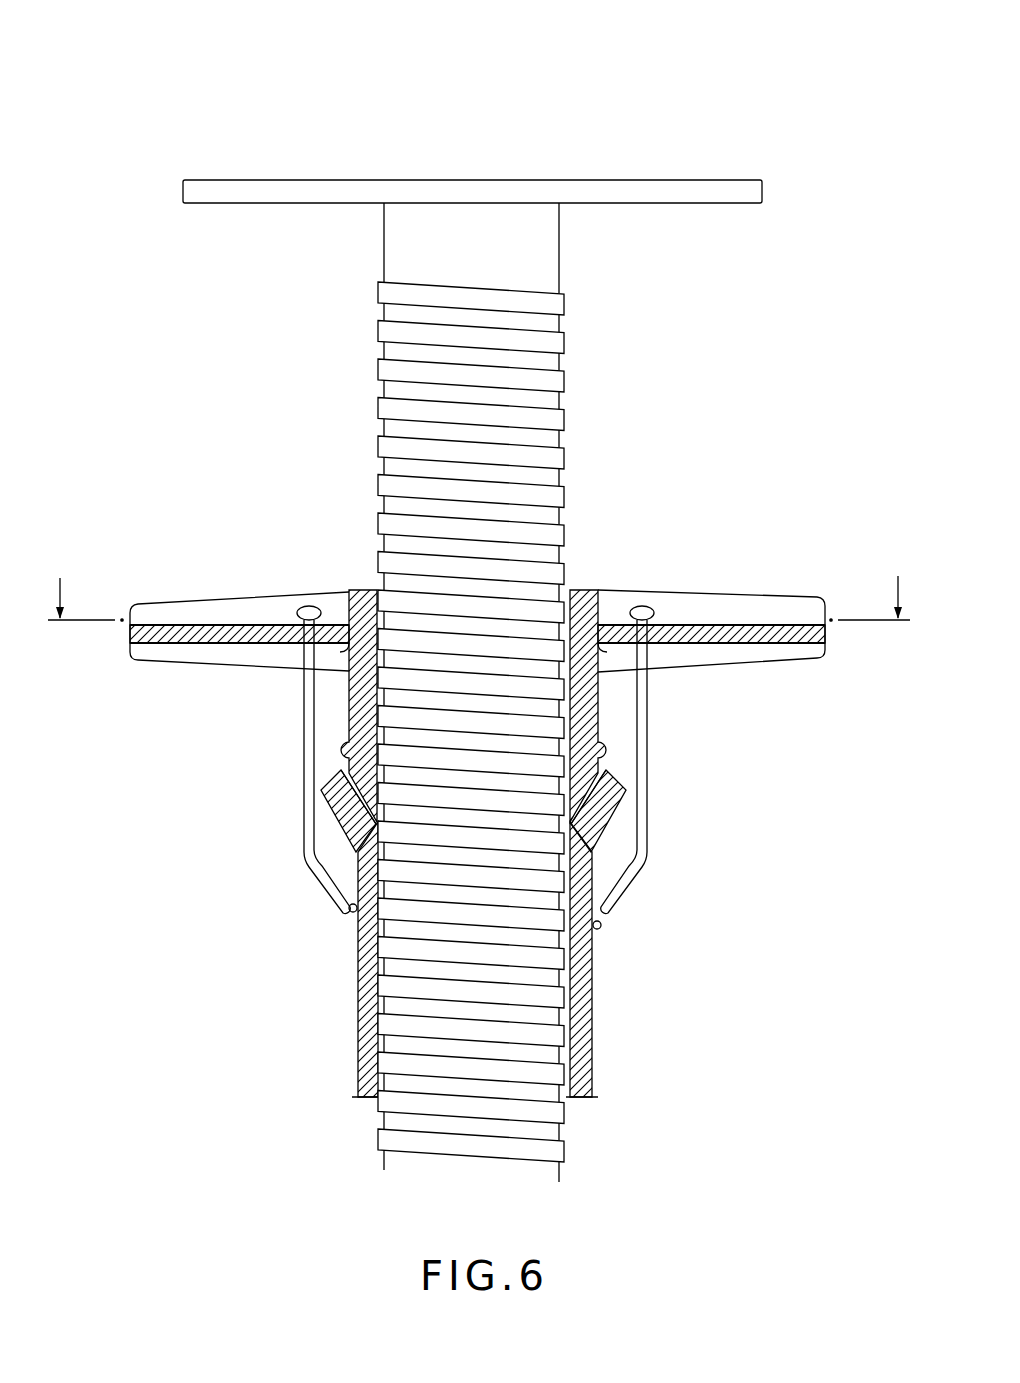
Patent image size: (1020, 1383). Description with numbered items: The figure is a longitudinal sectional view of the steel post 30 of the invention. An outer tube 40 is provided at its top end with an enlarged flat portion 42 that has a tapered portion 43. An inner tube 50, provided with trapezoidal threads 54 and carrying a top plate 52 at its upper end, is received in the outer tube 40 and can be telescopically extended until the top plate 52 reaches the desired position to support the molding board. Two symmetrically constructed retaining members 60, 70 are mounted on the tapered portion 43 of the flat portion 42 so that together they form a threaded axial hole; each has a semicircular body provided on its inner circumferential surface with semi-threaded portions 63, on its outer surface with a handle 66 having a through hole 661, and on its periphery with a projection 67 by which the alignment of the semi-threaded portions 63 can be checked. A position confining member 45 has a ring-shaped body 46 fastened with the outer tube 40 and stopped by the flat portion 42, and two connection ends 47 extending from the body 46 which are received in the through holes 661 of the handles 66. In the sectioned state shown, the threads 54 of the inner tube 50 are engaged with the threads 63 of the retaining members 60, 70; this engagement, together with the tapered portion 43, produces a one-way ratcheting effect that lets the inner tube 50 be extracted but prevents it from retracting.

The steel post 30 is at (340, 108).
The top plate 52 is at (680, 188).
The inner tube 50 is at (437, 692).
The trapezoidal threads 54 is at (572, 418).
The retaining member 70 is at (396, 657).
The retaining member 60 is at (627, 586).
The through holes 661 is at (660, 624).
The handle 66 is at (163, 612).
The semi-threaded portions 63 is at (380, 697).
The connection ends 47 is at (303, 766).
The projection 67 is at (630, 770).
The tapered portion 43 is at (622, 802).
The enlarged flat portion 42 is at (615, 822).
The position confining member 45 is at (526, 782).
The ring-shaped body 46 is at (602, 927).
The outer tube 40 is at (561, 933).